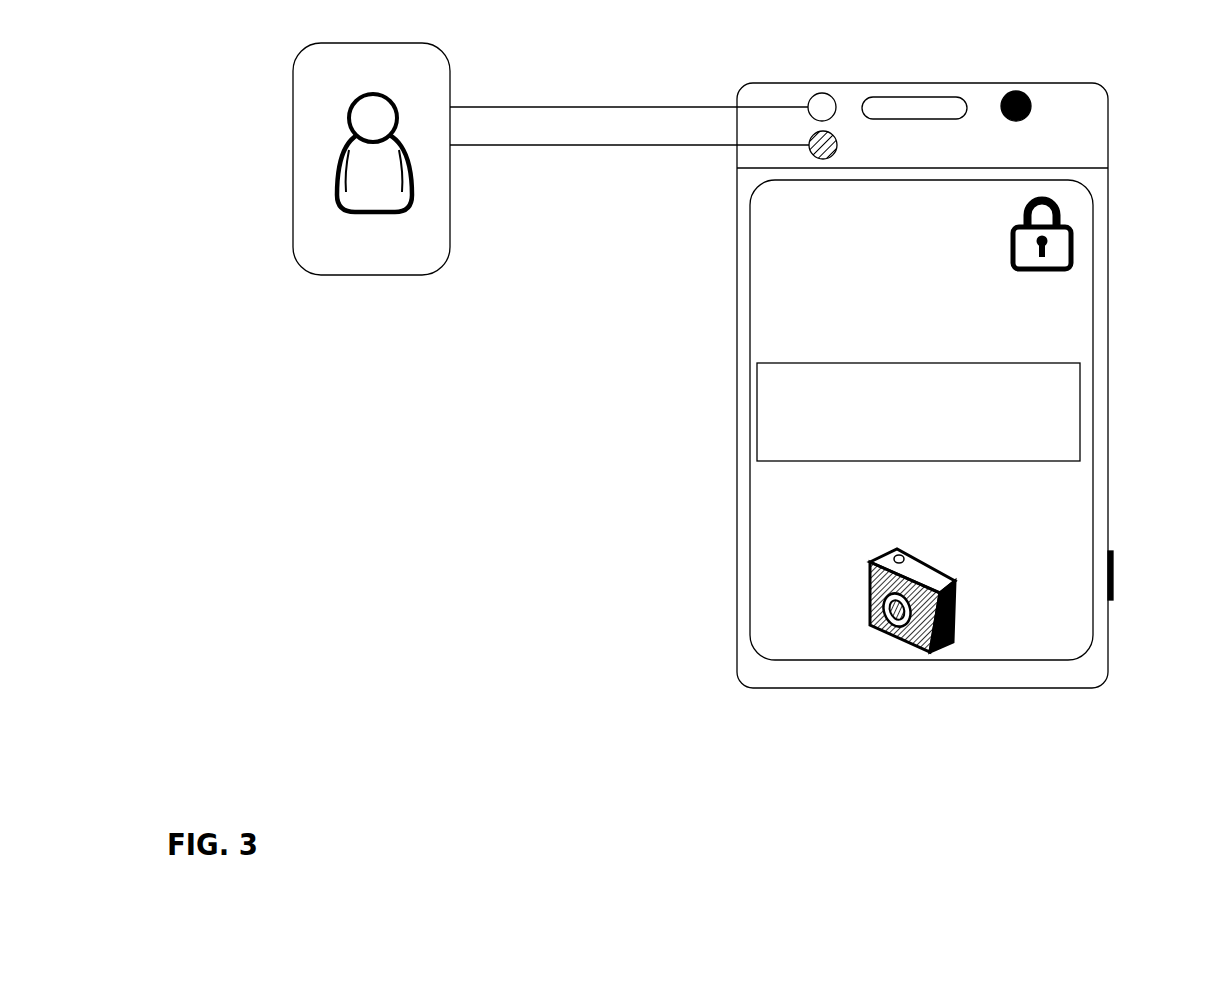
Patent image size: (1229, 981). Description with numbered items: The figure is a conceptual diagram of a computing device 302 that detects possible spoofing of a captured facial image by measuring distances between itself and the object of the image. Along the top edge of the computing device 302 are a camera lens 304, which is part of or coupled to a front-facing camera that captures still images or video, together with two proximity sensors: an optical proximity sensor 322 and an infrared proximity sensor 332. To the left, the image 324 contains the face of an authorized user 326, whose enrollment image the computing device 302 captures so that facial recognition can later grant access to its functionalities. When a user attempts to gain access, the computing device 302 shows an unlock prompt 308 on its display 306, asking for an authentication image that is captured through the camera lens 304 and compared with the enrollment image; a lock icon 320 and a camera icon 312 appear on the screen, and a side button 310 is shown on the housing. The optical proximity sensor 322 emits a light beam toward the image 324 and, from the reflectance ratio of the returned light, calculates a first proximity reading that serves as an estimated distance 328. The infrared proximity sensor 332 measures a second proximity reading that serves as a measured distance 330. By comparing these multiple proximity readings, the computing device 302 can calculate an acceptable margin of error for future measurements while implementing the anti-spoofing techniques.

The computing device 302 is at (737, 90).
The camera lens 304 is at (1027, 92).
The display screen 306 is at (737, 345).
The unlock prompt 308 is at (1080, 363).
The side button 310 is at (1113, 585).
The camera icon 312 is at (868, 580).
The lock icon 320 is at (1071, 232).
The optical proximity sensor 322 is at (822, 93).
The image 324 is at (293, 88).
The authorized user 326 is at (335, 175).
The estimated distance 328 is at (520, 107).
The measured distance 330 is at (557, 146).
The infrared proximity sensor 332 is at (818, 157).